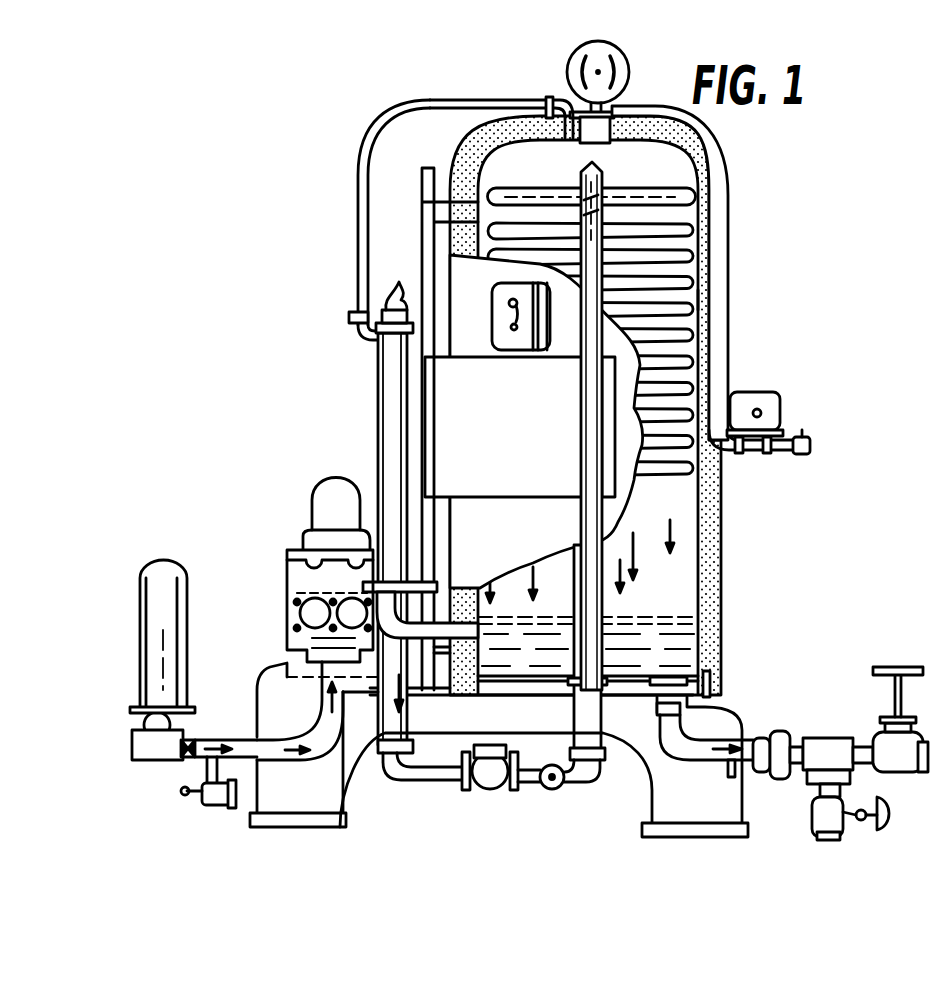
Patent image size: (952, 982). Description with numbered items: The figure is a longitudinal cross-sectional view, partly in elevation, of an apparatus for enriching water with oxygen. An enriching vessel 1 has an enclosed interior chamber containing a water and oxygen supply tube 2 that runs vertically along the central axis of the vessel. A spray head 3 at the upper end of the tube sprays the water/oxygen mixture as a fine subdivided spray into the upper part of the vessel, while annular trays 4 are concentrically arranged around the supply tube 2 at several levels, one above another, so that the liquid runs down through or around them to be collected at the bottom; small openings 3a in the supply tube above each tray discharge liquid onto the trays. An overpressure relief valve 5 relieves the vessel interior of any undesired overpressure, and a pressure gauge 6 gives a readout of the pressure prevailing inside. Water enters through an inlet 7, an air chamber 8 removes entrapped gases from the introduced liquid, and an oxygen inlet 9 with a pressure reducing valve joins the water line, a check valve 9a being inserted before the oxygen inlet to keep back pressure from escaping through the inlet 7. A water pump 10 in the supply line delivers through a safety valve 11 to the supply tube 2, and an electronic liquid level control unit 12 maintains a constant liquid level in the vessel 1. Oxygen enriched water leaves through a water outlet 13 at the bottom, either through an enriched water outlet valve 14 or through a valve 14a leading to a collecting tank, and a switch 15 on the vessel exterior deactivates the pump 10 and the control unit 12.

The enriching vessel 1 is at (721, 580).
The water and oxygen supply tube 2 is at (606, 574).
The spray head 3 is at (602, 178).
The small openings 3a is at (604, 196).
The annular trays 4 is at (712, 300).
The overpressure relief valve 5 is at (780, 405).
The pressure gauge 6 is at (606, 46).
The inlet 7 is at (131, 746).
The air chamber 8 is at (162, 633).
The oxygen inlet 9 is at (211, 804).
The check valve 9a is at (190, 742).
The water pump 10 is at (333, 485).
The safety valve 11 is at (490, 783).
The electronic liquid level control unit 12 is at (397, 407).
The water outlet 13 is at (673, 749).
The enriched water outlet valve 14 is at (878, 730).
The valve 14a is at (838, 821).
The switch 15 is at (510, 343).